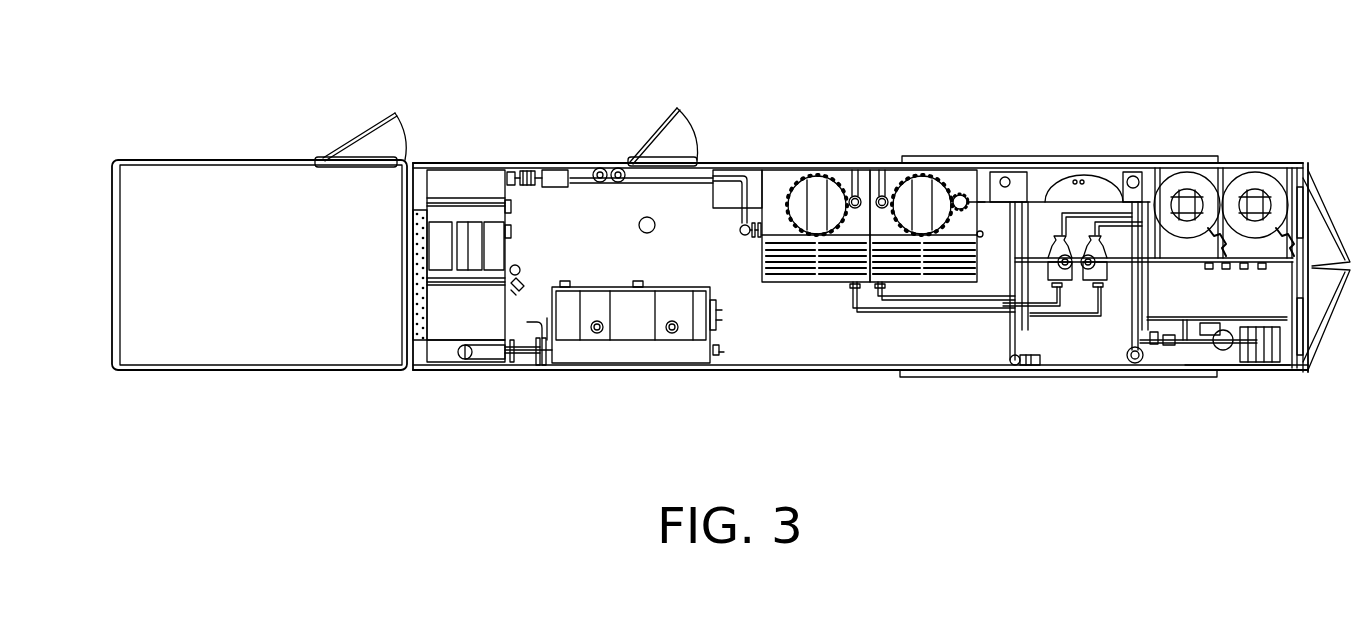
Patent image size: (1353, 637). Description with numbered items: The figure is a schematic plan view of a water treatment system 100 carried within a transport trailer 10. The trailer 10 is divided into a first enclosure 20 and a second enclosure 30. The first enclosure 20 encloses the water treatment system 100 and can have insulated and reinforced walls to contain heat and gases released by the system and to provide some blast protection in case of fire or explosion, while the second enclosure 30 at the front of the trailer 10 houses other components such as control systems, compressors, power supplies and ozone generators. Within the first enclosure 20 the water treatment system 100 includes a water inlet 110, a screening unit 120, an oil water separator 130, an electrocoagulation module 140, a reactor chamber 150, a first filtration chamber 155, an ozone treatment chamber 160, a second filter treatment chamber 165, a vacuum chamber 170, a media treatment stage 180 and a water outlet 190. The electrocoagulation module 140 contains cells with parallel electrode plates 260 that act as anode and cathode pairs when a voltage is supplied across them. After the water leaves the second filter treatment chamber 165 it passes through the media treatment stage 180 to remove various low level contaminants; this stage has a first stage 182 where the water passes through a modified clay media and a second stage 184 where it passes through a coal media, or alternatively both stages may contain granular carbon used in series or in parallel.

The transport trailer 10 is at (1016, 50).
The first enclosure 20 is at (588, 215).
The second enclosure 30 is at (267, 198).
The water treatment system 100 is at (687, 225).
The water inlet 110 is at (717, 170).
The screening unit 120 is at (753, 190).
The oil water separator 130 is at (630, 350).
The electrocoagulation module 140 is at (437, 342).
The reactor chamber 150 is at (833, 197).
The first filtration chamber 155 is at (803, 268).
The ozone treatment chamber 160 is at (922, 190).
The second filter treatment chamber 165 is at (917, 268).
The vacuum chamber 170 is at (1067, 190).
The media treatment stage 180 is at (1237, 132).
The first stage 182 is at (1193, 195).
The second stage 184 is at (1260, 178).
The water outlet 190 is at (740, 170).
The electrode plates 260 is at (450, 180).